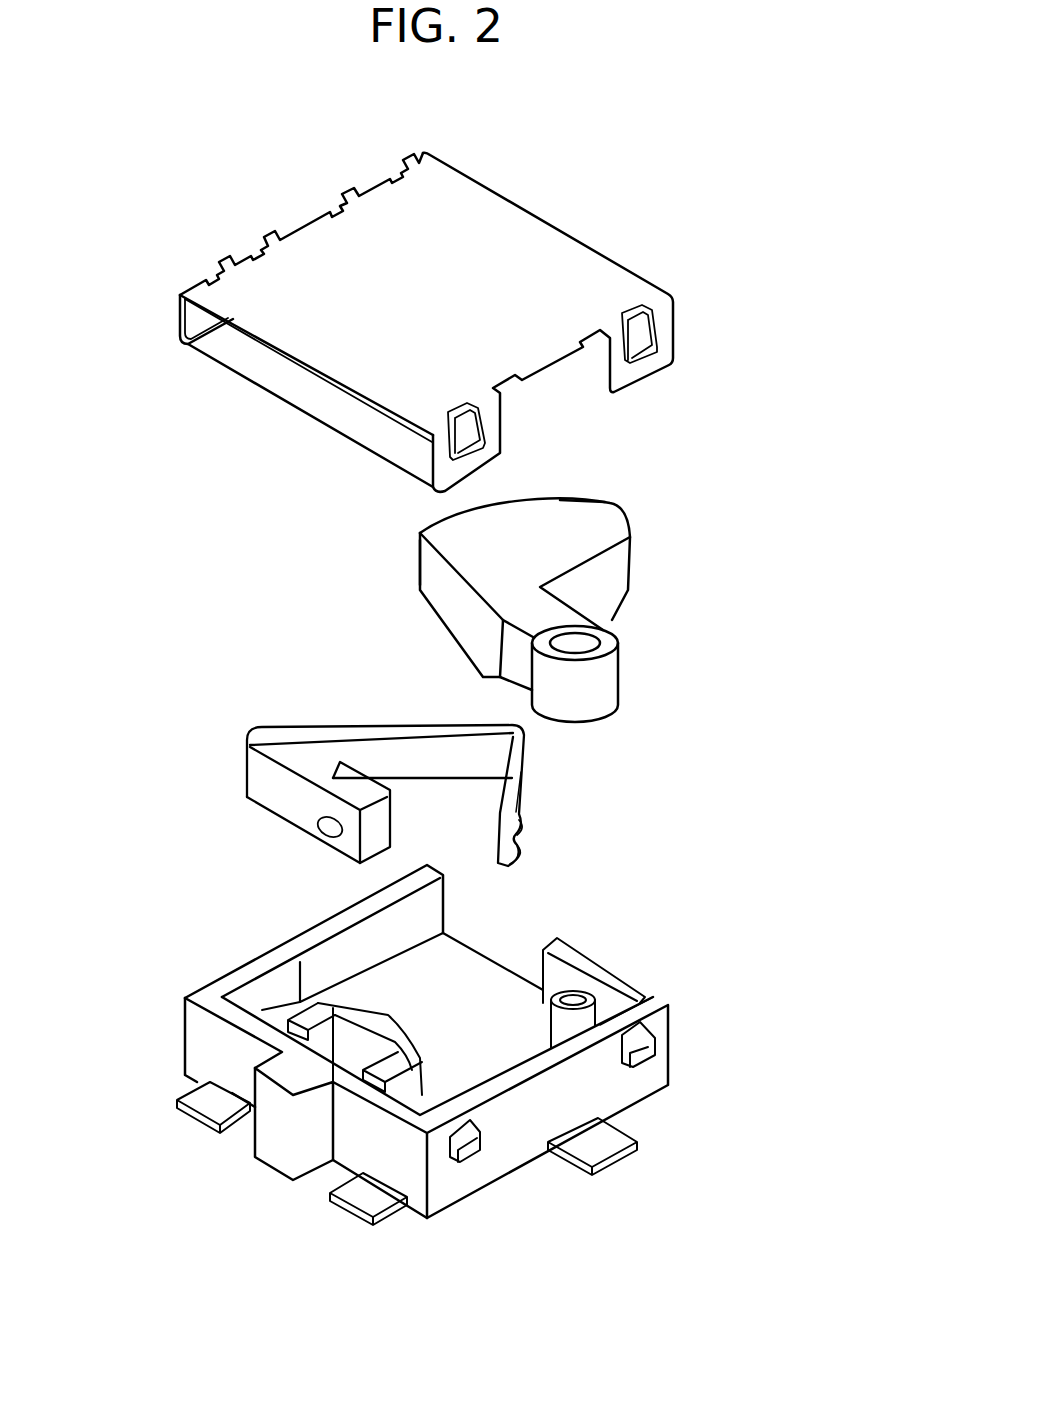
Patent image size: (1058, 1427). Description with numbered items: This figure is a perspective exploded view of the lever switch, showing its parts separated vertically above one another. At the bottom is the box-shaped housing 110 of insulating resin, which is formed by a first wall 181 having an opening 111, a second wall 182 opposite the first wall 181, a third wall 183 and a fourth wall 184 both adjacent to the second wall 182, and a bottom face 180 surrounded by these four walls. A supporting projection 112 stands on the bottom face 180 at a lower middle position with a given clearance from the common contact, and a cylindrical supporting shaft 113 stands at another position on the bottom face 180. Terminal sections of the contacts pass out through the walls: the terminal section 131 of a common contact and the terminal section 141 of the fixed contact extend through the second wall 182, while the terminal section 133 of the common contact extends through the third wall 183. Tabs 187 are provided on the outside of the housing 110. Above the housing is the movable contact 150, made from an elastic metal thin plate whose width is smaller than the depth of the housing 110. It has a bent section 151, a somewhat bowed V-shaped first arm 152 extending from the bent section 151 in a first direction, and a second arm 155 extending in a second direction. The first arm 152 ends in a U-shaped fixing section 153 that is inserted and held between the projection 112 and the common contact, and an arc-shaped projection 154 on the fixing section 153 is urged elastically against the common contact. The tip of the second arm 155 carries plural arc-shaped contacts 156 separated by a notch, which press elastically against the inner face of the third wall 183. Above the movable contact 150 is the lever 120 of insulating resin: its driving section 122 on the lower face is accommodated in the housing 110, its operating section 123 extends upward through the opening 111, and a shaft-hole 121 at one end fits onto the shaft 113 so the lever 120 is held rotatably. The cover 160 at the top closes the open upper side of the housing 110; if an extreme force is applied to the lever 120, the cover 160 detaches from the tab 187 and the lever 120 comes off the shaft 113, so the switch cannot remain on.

The housing 110 is at (459, 1086).
The opening 111 is at (497, 945).
The supporting projection 112 is at (290, 1012).
The cylindrical supporting shaft 113 is at (655, 1012).
The lever 120 is at (481, 580).
The shaft-hole 121 is at (587, 645).
The driving section 122 is at (427, 560).
The operating section 123 is at (603, 520).
The terminal section 131 is at (217, 1117).
The terminal section 133 is at (615, 1145).
The terminal section 141 is at (367, 1207).
The movable contact 150 is at (484, 765).
The bent section 151 is at (532, 748).
The first arm 152 is at (340, 717).
The fixing section 153 is at (307, 780).
The arc-shaped projection 154 is at (318, 815).
The second arm 155 is at (530, 790).
The arc-shaped contacts 156 is at (518, 827).
The cover 160 is at (558, 205).
The bottom face 180 is at (403, 978).
The first wall 181 is at (565, 952).
The second wall 182 is at (372, 1093).
The third wall 183 is at (575, 1042).
The fourth wall 184 is at (268, 962).
The tab 187 is at (442, 1240).